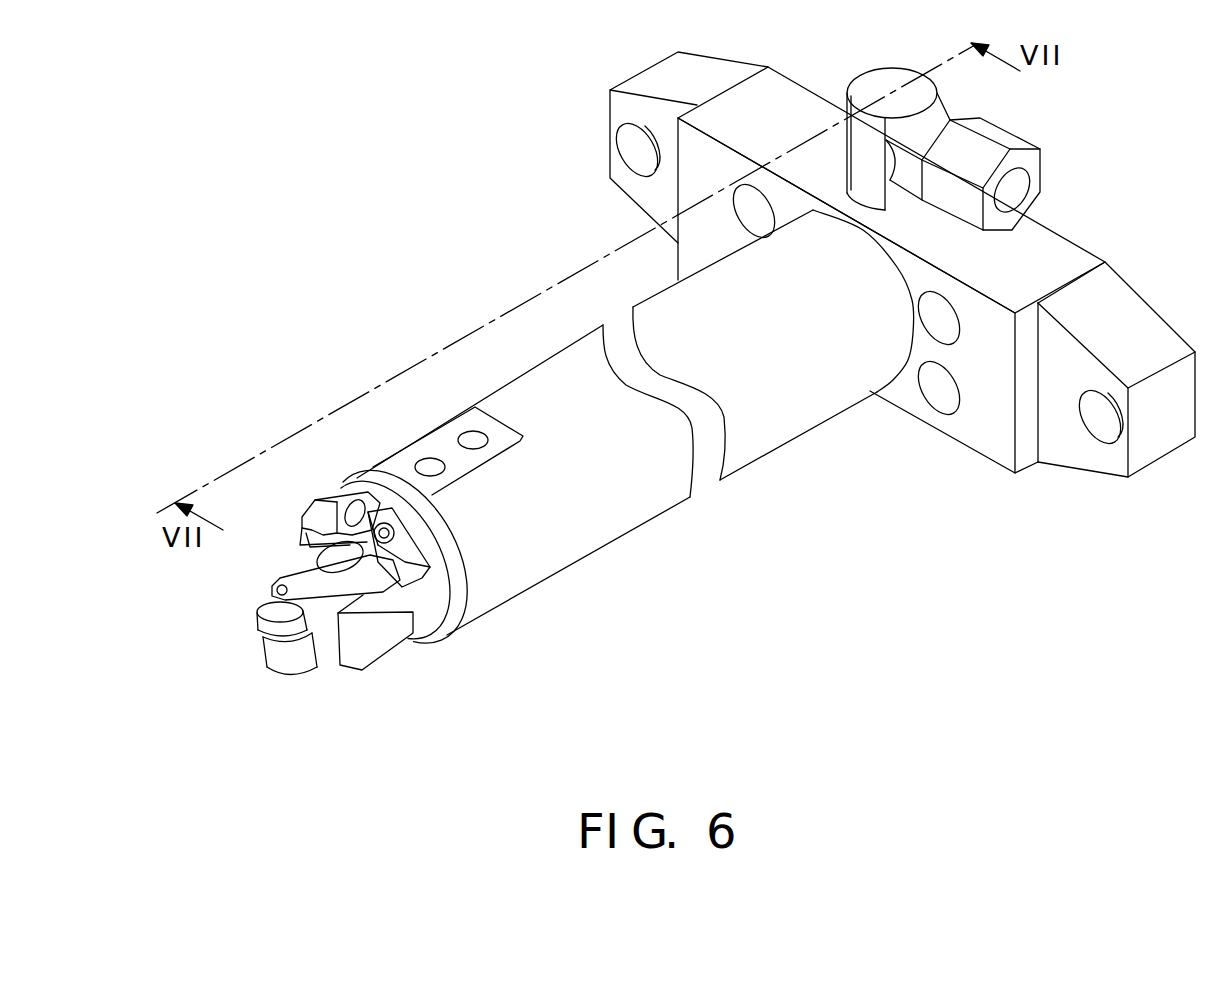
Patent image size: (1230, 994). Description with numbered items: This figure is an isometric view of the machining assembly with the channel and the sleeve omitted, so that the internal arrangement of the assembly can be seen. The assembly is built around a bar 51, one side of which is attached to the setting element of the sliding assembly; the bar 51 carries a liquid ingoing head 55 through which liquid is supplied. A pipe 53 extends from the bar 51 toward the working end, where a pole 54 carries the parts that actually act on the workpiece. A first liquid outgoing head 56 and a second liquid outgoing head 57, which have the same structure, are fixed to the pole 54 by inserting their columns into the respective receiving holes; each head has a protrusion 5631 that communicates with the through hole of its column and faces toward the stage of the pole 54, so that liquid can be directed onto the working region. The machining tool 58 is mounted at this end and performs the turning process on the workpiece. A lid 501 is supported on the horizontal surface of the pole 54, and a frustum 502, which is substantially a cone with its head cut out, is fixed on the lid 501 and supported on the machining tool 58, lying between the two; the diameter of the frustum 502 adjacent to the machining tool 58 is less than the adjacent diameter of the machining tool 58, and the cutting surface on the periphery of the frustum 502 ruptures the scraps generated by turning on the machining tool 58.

The bar 51 is at (1043, 263).
The pipe 53 is at (610, 530).
The pole 54 is at (368, 637).
The liquid ingoing head 55 is at (998, 152).
The first liquid outgoing head 56 is at (310, 513).
The second liquid outgoing head 57 is at (407, 563).
The machining tool 58 is at (272, 650).
The lid 501 is at (283, 580).
The frustum 502 is at (260, 612).
The protrusion 5631 is at (302, 543).